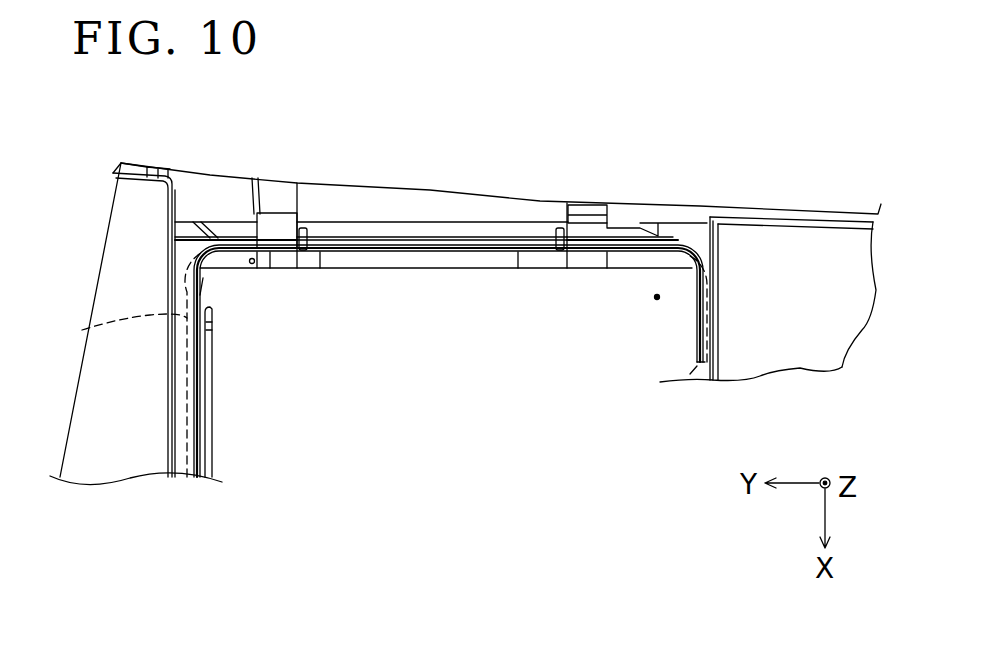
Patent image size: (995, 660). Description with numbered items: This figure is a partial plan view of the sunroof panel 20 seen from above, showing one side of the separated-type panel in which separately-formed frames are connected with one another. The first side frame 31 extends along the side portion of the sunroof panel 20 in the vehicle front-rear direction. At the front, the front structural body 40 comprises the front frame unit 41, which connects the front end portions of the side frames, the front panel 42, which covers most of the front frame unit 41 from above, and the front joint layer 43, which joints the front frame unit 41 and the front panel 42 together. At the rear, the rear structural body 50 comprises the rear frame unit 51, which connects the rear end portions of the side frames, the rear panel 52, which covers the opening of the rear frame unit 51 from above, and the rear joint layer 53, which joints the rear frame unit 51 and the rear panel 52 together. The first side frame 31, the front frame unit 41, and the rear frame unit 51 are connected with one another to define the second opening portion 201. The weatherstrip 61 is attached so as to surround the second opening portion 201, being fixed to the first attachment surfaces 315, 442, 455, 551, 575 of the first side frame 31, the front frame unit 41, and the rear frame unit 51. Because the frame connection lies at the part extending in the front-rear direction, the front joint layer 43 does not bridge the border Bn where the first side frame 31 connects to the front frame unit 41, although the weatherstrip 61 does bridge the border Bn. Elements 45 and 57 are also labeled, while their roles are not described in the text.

The sunroof panel 20 is at (768, 90).
The first side frame 31 is at (435, 190).
The front structural body 40 is at (84, 283).
The front frame unit 41 is at (136, 160).
The front panel 42 is at (92, 378).
The front joint layer 43 is at (171, 169).
The bracket 45 is at (278, 178).
The first attachment surface 455 is at (273, 243).
The first attachment surface 315 is at (415, 246).
The border Bn is at (312, 230).
The bracket 57 is at (586, 203).
The first attachment surface 575 is at (618, 240).
The second opening portion 201 is at (657, 296).
The weatherstrip 61 is at (82, 330).
The first attachment surface 442 is at (208, 440).
The first attachment surface 551 is at (690, 376).
The rear structural body 50 is at (830, 212).
The rear frame unit 51 is at (768, 208).
The rear panel 52 is at (796, 352).
The rear joint layer 53 is at (718, 364).